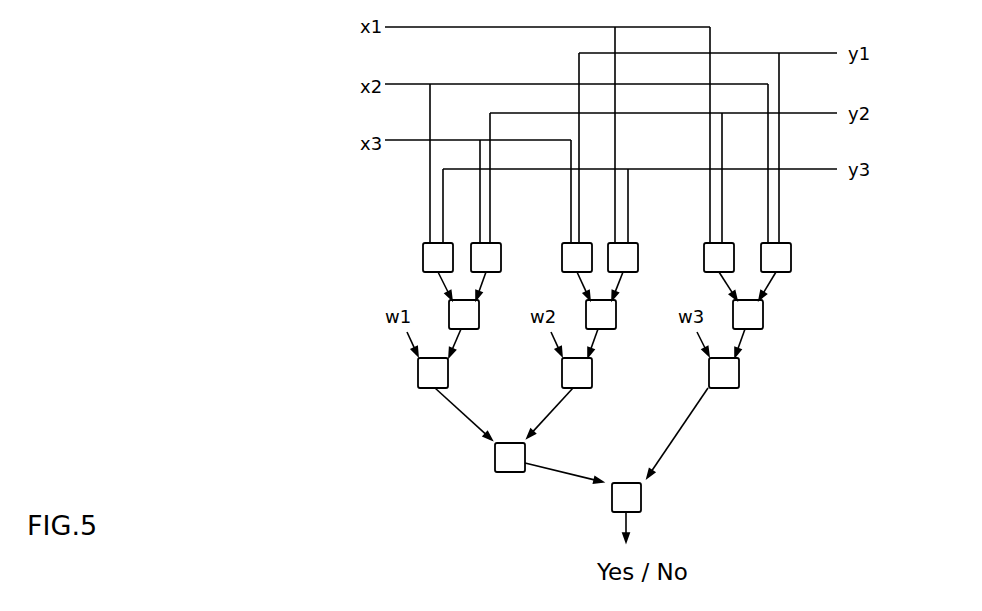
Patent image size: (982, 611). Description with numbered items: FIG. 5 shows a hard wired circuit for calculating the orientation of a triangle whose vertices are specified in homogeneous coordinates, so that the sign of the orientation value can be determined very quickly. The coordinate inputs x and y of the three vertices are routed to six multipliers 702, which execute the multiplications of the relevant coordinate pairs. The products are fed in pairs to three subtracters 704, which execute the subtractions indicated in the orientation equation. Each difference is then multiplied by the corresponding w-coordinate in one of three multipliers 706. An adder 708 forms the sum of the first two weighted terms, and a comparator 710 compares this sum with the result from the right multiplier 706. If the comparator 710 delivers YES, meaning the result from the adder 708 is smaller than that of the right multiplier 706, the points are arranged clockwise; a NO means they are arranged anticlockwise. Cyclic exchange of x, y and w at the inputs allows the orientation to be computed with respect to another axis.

The multipliers 702 is at (791, 258).
The subtracters 704 is at (763, 315).
The multipliers 706 is at (739, 375).
The adder 708 is at (494, 458).
The comparator 710 is at (641, 497).